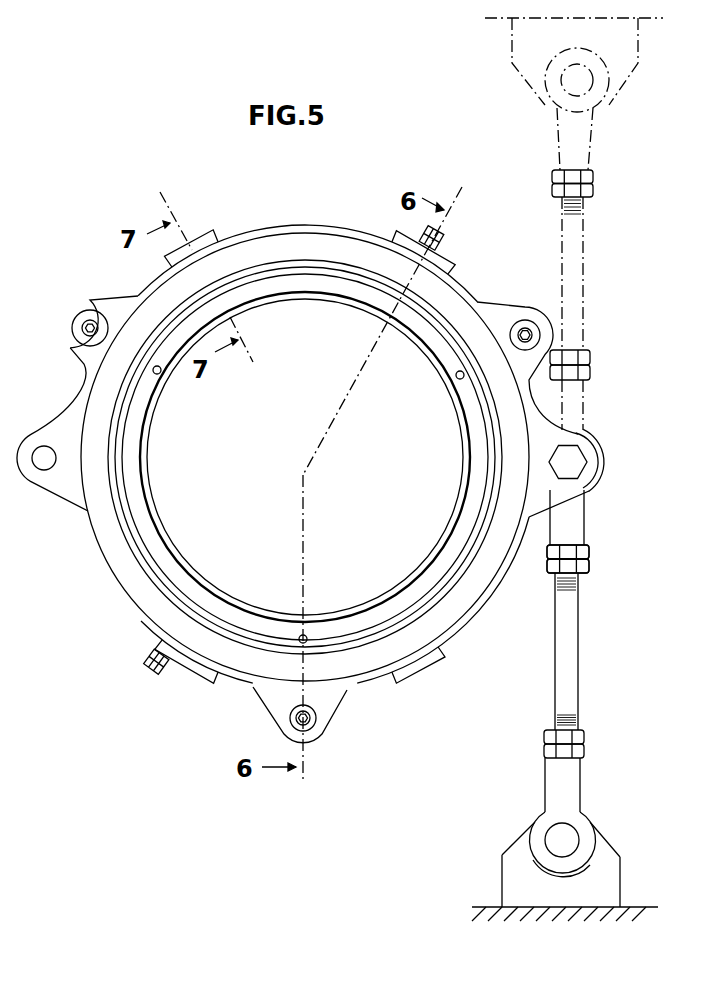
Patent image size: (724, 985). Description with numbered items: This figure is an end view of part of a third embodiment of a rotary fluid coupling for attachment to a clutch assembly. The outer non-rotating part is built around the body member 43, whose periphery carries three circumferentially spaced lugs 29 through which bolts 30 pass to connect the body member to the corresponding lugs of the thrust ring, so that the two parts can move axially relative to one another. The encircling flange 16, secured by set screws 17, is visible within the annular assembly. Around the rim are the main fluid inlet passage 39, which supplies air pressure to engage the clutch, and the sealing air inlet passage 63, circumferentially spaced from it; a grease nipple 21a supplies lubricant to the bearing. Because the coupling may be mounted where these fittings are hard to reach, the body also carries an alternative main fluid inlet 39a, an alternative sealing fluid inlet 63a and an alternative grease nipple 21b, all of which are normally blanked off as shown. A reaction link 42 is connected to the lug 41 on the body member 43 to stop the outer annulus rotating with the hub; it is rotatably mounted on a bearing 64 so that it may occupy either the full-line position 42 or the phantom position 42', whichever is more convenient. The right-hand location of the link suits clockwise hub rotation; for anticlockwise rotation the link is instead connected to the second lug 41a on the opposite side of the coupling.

The encircling flange 16 is at (452, 298).
The set screws 17 is at (158, 375).
The grease nipple 21a is at (444, 238).
The alternative grease nipple 21b is at (157, 662).
The lugs 29 is at (107, 308).
The bolts 30 is at (85, 330).
The passage 39 is at (400, 242).
The alternative main fluid inlet 39a is at (172, 684).
The lug 41 is at (545, 505).
The second lug 41a is at (63, 483).
The reaction link 42 is at (565, 705).
The reaction link (alternative position) 42' is at (574, 224).
The body member 43 is at (325, 224).
The sealing air inlet passage 63 is at (203, 234).
The alternative sealing fluid inlet 63a is at (428, 690).
The bearing 64 is at (578, 536).